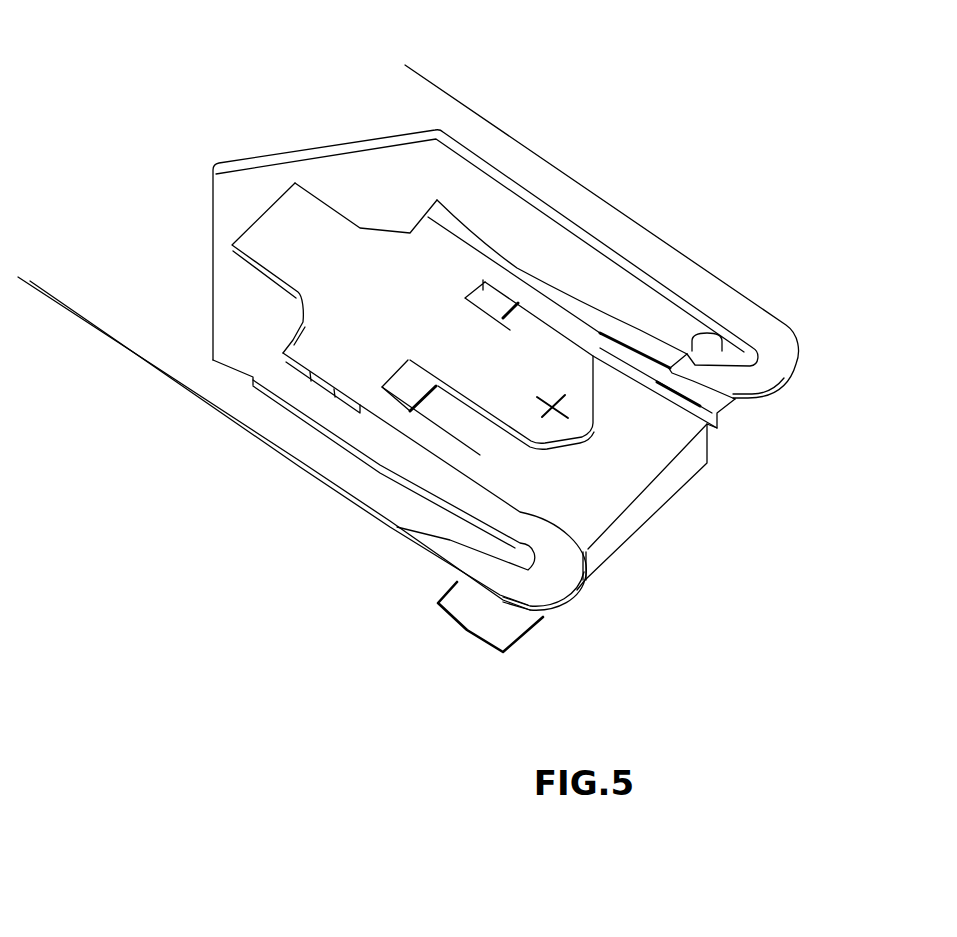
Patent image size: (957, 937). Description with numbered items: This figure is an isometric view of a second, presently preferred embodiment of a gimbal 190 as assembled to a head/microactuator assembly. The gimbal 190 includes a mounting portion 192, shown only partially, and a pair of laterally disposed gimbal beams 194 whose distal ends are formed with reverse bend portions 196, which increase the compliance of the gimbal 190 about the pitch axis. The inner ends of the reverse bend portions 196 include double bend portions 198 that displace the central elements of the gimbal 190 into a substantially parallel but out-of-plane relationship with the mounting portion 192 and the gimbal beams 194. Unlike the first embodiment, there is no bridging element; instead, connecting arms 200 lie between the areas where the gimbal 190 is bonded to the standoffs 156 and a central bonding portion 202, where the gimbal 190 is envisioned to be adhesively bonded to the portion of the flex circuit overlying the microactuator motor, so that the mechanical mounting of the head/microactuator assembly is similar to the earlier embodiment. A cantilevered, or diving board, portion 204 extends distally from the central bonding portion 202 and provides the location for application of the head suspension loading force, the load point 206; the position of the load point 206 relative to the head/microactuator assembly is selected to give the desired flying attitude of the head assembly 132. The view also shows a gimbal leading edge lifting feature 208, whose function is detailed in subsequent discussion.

The head assembly 132 is at (627, 470).
The standoffs 156 is at (480, 531).
The gimbal 190 is at (48, 298).
The mounting portion 192 is at (97, 141).
The gimbal beams 194 is at (583, 207).
The reverse bend portions 196 is at (467, 630).
The double bend portions 198 is at (707, 331).
The connecting arms 200 is at (448, 478).
The central bonding portion 202 is at (399, 294).
The cantilevered portion 204 is at (478, 360).
The load point 206 is at (555, 403).
The gimbal leading edge lifting feature 208 is at (295, 233).